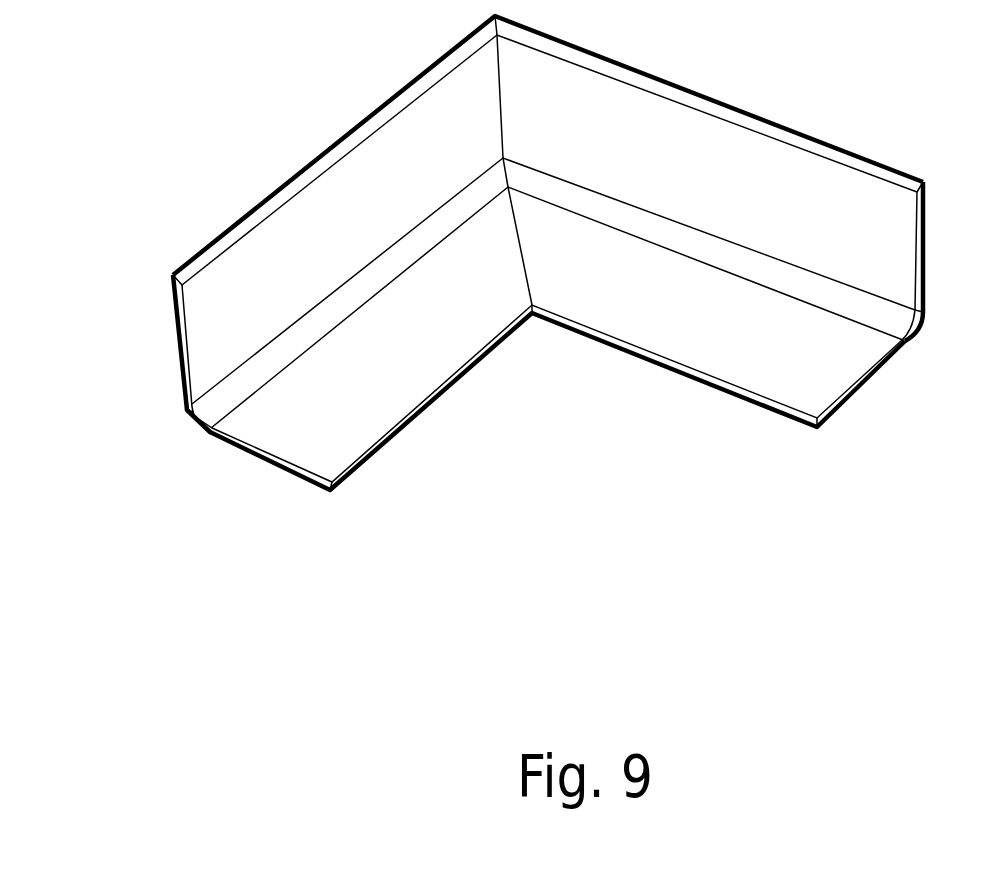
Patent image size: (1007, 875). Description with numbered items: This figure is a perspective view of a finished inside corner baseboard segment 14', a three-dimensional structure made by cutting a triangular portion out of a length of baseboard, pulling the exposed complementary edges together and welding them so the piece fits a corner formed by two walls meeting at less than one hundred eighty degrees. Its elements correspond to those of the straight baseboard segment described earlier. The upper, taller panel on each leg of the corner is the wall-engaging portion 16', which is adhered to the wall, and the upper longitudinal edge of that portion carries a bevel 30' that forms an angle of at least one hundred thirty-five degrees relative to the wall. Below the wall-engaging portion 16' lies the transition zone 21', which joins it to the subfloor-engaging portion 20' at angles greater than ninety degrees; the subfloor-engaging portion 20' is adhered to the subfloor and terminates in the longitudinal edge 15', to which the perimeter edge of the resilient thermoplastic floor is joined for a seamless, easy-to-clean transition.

The inside corner baseboard segment 14' is at (471, 283).
The longitudinal edge 15' is at (510, 427).
The wall-engaging portion 16' is at (471, 225).
The subfloor-engaging portion 20' is at (476, 316).
The transition zone 21' is at (131, 396).
The bevel 30' is at (477, 150).